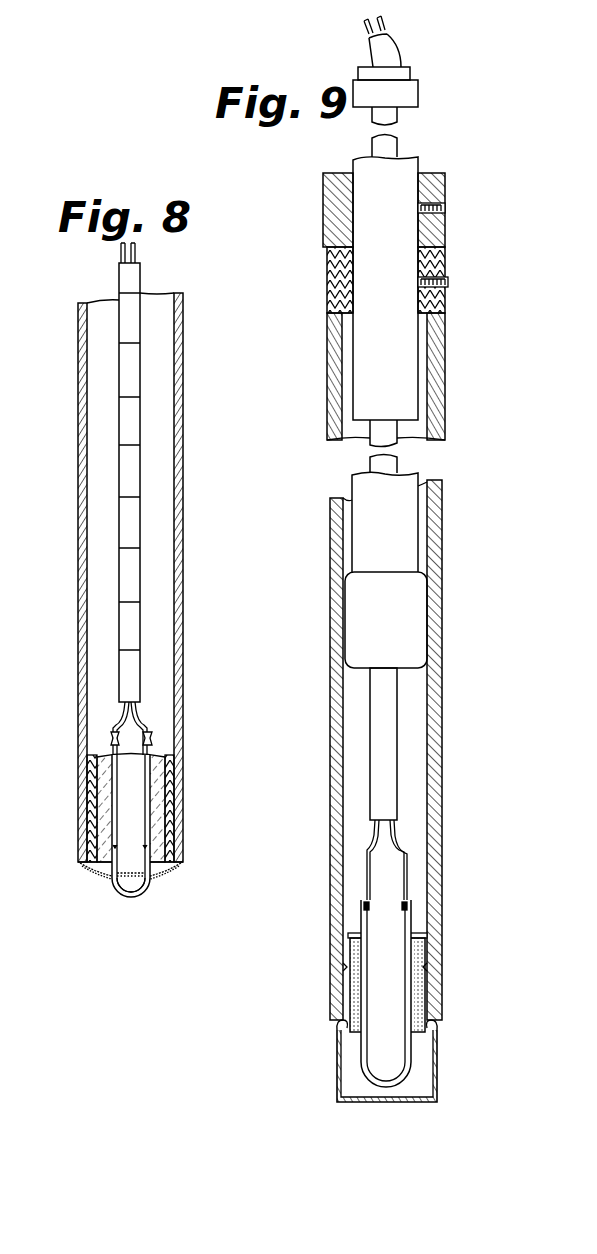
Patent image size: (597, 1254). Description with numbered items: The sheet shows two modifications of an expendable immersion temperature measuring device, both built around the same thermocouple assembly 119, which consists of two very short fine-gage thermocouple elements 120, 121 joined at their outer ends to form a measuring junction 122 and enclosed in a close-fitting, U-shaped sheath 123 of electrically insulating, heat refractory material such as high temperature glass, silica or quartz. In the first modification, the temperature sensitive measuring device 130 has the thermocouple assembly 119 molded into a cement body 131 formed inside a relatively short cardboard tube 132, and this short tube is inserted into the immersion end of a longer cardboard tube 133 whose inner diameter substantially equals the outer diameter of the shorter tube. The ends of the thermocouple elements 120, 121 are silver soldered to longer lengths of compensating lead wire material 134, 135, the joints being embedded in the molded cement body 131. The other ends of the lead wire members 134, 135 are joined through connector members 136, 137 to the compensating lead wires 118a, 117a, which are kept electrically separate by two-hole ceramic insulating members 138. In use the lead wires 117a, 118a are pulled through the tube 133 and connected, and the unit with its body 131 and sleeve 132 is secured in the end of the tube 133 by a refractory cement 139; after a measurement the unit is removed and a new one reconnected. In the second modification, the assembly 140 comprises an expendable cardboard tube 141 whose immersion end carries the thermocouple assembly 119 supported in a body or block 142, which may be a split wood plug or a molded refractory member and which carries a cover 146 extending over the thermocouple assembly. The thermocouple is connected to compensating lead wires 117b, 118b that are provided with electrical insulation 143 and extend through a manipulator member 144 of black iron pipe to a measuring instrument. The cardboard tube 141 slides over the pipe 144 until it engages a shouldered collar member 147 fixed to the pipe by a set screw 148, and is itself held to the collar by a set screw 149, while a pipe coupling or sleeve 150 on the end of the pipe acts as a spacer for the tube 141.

In FIG. 8, the temperature sensitive measuring device 130 is at (161, 581).
In FIG. 8, the cardboard tube 132 is at (168, 833).
In FIG. 8, the body 131 is at (158, 850).
In FIG. 8, the cardboard tube 133 is at (170, 760).
In FIG. 8, the compensating lead wire material 134 is at (145, 802).
In FIG. 8, the compensating lead wire material 135 is at (118, 813).
In FIG. 8, the connector member 136 is at (152, 738).
In FIG. 8, the connector member 137 is at (111, 738).
In FIG. 8, the two-hole ceramic insulating member 138 is at (128, 658).
In FIG. 8, the refractory cement 139 is at (92, 862).
In FIG. 8, the compensating lead wire 117a is at (113, 713).
In FIG. 8, the compensating lead wire 118a is at (146, 712).
In FIG. 8, the thermocouple assembly 119 is at (133, 859).
In FIG. 9, the thermocouple assembly 119 is at (392, 1083).
In FIG. 8, the thermocouple element 120 is at (150, 880).
In FIG. 8, the thermocouple element 121 is at (112, 885).
In FIG. 8, the measuring junction 122 is at (130, 897).
In FIG. 8, the sheath 123 is at (106, 910).
In FIG. 9, the assembly 140 is at (387, 582).
In FIG. 9, the cardboard tube 141 is at (437, 878).
In FIG. 9, the body or block 142 is at (385, 985).
In FIG. 9, the electrical insulation 143 is at (386, 705).
In FIG. 9, the manipulator member 144 is at (364, 356).
In FIG. 9, the cover 146 is at (340, 1080).
In FIG. 9, the shouldered collar member 147 is at (428, 235).
In FIG. 9, the set screw 148 is at (445, 205).
In FIG. 9, the set screw 149 is at (445, 287).
In FIG. 9, the pipe coupling or sleeve 150 is at (360, 586).
In FIG. 9, the compensating lead wire 117b is at (369, 36).
In FIG. 9, the compensating lead wire 118b is at (386, 32).